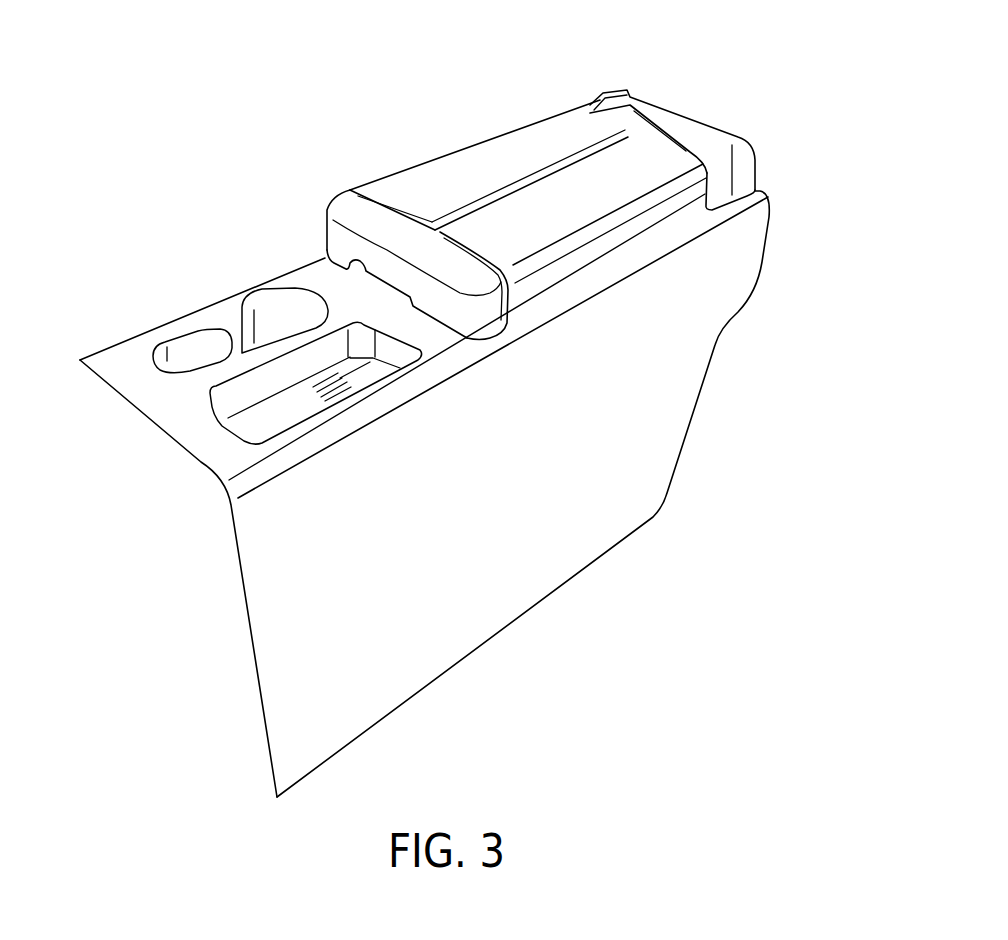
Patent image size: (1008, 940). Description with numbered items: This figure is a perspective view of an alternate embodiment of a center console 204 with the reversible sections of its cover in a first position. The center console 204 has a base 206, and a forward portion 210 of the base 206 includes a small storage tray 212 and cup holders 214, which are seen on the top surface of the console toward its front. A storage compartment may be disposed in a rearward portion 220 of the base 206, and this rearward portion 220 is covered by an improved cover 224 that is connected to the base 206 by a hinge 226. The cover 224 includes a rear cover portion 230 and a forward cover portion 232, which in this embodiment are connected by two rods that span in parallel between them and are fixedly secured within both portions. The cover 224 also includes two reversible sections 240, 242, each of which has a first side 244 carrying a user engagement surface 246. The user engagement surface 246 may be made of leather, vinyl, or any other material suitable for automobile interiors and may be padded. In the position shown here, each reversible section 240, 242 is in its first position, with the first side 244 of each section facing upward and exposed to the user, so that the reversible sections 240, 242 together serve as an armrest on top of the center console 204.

The center console 204 is at (667, 630).
The base 206 is at (635, 493).
The forward portion 210 is at (260, 550).
The storage tray 212 is at (255, 427).
The cup holders 214 is at (188, 350).
The rearward portion 220 is at (700, 307).
The cover 224 is at (375, 150).
The hinge 226 is at (747, 137).
The rear cover portion 230 is at (732, 170).
The forward cover portion 232 is at (326, 237).
The reversible section 240 is at (455, 155).
The reversible section 242 is at (657, 217).
The first side 244 is at (548, 120).
The user engagement surface 246 is at (506, 160).